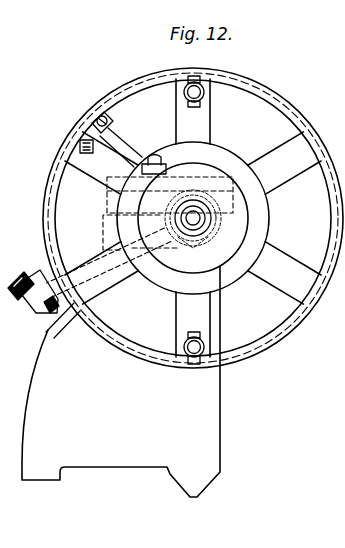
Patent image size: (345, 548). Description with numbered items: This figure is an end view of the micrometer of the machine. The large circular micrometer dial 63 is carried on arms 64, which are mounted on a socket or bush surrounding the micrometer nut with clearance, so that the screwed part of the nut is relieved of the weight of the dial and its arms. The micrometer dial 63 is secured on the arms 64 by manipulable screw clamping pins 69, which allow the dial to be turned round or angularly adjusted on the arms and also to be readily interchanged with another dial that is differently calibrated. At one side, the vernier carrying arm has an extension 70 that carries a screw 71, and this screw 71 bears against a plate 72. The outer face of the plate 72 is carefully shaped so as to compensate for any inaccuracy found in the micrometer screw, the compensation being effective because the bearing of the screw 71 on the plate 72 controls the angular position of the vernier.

The micrometer dial 63 is at (273, 93).
The arms 64 is at (270, 161).
The screw clamping pins 69 is at (201, 86).
The extension 70 is at (47, 278).
The screw 71 is at (23, 293).
The plate 72 is at (44, 333).